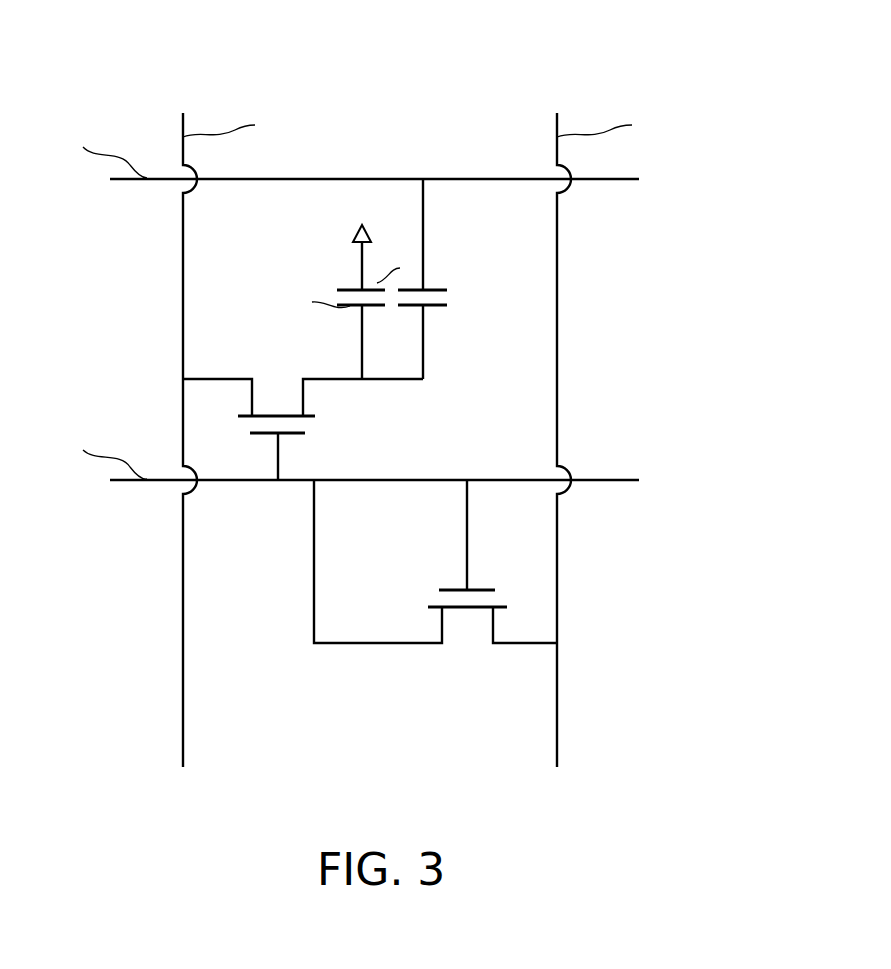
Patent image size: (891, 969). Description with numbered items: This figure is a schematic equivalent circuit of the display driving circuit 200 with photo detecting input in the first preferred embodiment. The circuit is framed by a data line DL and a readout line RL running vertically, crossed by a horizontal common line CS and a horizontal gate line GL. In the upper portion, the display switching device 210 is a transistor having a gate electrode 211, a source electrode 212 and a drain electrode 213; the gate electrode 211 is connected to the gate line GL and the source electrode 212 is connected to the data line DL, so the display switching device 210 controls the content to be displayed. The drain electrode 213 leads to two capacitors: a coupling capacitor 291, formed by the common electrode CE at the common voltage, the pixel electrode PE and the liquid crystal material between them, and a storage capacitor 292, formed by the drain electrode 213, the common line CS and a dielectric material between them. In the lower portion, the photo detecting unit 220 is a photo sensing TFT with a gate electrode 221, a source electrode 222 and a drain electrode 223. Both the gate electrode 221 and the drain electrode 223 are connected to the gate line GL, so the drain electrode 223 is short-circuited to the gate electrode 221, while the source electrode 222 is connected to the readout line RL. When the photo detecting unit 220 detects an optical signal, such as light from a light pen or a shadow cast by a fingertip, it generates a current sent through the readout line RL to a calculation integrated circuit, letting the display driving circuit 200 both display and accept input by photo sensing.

The display driving circuit 200 is at (735, 103).
The display switching device 210 is at (312, 400).
The gate electrode 211 is at (302, 456).
The source electrode 212 is at (248, 393).
The drain electrode 213 is at (300, 390).
The photo detecting unit 220 is at (432, 597).
The gate electrode 221 is at (465, 528).
The source electrode 222 is at (495, 625).
The drain electrode 223 is at (438, 623).
The coupling capacitor 291 is at (330, 278).
The storage capacitor 292 is at (447, 280).